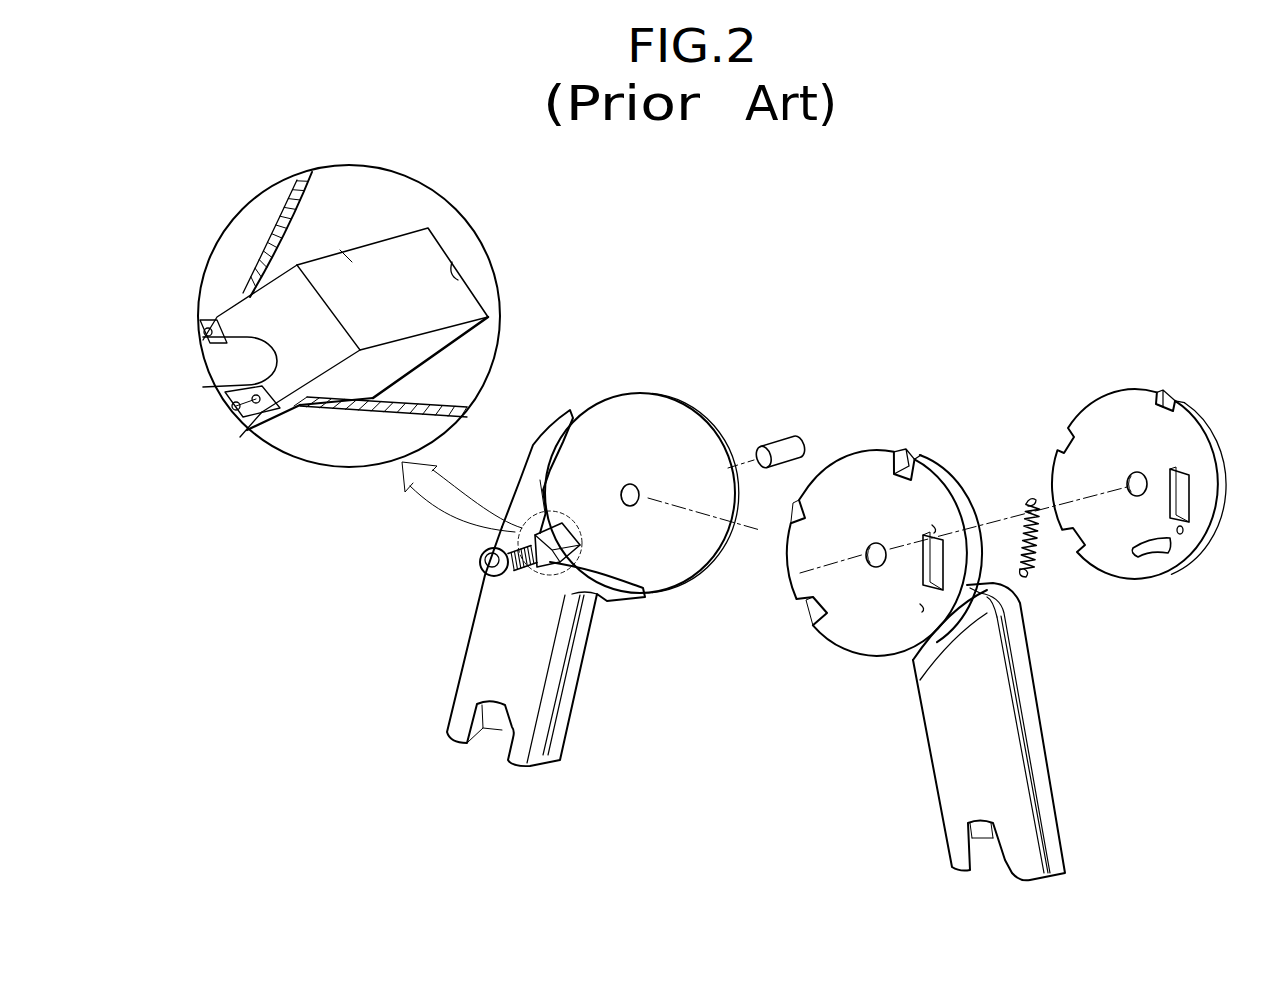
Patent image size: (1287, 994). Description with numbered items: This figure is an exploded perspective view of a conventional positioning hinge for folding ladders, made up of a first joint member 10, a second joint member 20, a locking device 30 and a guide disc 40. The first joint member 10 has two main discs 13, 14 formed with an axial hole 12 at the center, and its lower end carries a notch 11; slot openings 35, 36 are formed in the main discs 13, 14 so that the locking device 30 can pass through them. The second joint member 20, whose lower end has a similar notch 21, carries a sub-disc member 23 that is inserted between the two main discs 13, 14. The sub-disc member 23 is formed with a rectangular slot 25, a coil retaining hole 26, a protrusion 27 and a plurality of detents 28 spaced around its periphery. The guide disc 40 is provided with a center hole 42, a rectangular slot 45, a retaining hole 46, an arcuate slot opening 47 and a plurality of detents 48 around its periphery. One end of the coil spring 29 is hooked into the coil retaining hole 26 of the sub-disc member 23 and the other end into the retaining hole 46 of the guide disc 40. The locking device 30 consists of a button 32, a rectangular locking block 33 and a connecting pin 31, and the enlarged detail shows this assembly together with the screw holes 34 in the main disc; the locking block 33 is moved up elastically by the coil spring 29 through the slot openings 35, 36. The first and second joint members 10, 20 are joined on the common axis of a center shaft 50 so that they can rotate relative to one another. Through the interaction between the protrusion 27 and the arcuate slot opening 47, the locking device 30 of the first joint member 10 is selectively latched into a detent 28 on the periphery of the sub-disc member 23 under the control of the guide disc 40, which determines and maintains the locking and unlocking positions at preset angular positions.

The first joint member 10 is at (506, 646).
The notch of first arm 11 is at (455, 712).
The axial hole 12 is at (636, 493).
The main disc 13 is at (243, 415).
The main disc 14 is at (642, 459).
The second joint member 20 is at (1036, 731).
The notch of second arm 21 is at (1062, 850).
The sub-disc member 23 is at (893, 536).
The rectangular slot 25 is at (945, 586).
The coil retaining hole 26 is at (934, 525).
The protrusion 27 is at (921, 607).
The detents 28 is at (906, 462).
The coil spring 29 is at (1030, 572).
The locking device 30 is at (486, 559).
The connecting pin 31 is at (248, 340).
The button 32 is at (478, 572).
The rectangular locking block 33 is at (352, 262).
The screw hole 34 is at (207, 332).
The slot opening 35 is at (205, 353).
The slot opening 36 is at (455, 260).
The guide disc 40 is at (1151, 481).
The center hole 42 is at (1141, 474).
The rectangular slot 45 is at (1190, 495).
The retaining hole 46 is at (1184, 532).
The arcuate slot opening 47 is at (1152, 548).
The detents 48 is at (1163, 393).
The center shaft 50 is at (792, 445).